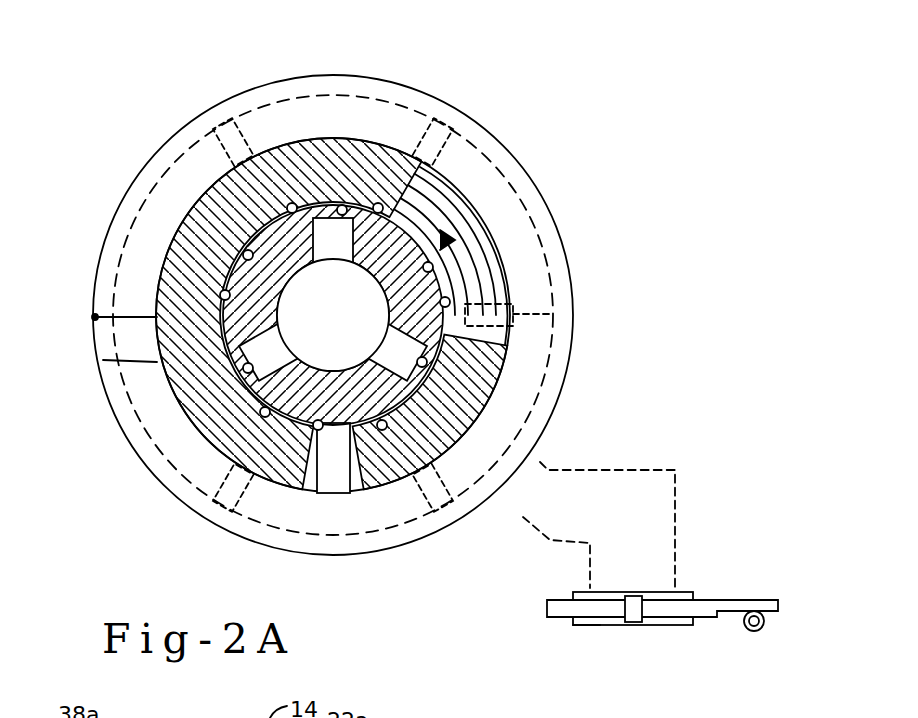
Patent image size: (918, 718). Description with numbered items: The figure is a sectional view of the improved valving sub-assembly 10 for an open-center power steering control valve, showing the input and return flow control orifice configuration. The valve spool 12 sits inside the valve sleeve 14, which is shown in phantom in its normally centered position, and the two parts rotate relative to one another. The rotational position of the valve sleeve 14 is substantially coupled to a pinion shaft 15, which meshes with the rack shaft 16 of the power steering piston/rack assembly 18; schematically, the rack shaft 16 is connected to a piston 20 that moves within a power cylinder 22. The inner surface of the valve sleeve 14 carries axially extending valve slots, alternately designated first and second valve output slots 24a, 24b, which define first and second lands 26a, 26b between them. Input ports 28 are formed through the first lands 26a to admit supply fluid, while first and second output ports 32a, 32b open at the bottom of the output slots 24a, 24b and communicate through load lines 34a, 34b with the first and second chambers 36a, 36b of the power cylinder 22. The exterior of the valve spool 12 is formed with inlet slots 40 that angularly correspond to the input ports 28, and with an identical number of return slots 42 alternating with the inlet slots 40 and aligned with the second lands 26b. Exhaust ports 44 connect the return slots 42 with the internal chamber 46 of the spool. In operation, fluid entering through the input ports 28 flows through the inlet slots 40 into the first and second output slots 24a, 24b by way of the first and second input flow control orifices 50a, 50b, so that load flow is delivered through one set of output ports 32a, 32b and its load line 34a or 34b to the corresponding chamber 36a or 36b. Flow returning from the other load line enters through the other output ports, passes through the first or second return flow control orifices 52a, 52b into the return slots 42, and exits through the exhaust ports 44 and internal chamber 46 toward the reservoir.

The valving sub-assembly 10 is at (488, 62).
The valve spool 12 is at (415, 178).
The valve sleeve 14 is at (445, 262).
The pinion shaft 15 is at (753, 632).
The rack shaft 16 is at (700, 603).
The power steering piston/rack assembly 18 is at (757, 520).
The piston 20 is at (635, 623).
The power cylinder 22 is at (588, 628).
The first valve output slots 24a is at (290, 200).
The second valve output slots 24b is at (362, 150).
The first lands 26a is at (257, 247).
The second lands 26b is at (358, 205).
The input ports 28 is at (452, 240).
The first output ports 32a is at (243, 147).
The second output ports 32b is at (450, 103).
The first load line 34a is at (622, 470).
The second load line 34b is at (540, 535).
The first chamber 36a is at (688, 626).
The second chamber 36b is at (575, 598).
The inlet slots 40 is at (140, 203).
The return slots 42 is at (320, 205).
The exhaust ports 44 is at (330, 256).
The internal chamber 46 is at (333, 315).
The first input flow control orifices 50a is at (262, 238).
The second input flow control orifices 50b is at (428, 230).
The first return flow control orifices 52a is at (318, 205).
The second return flow control orifices 52b is at (382, 150).